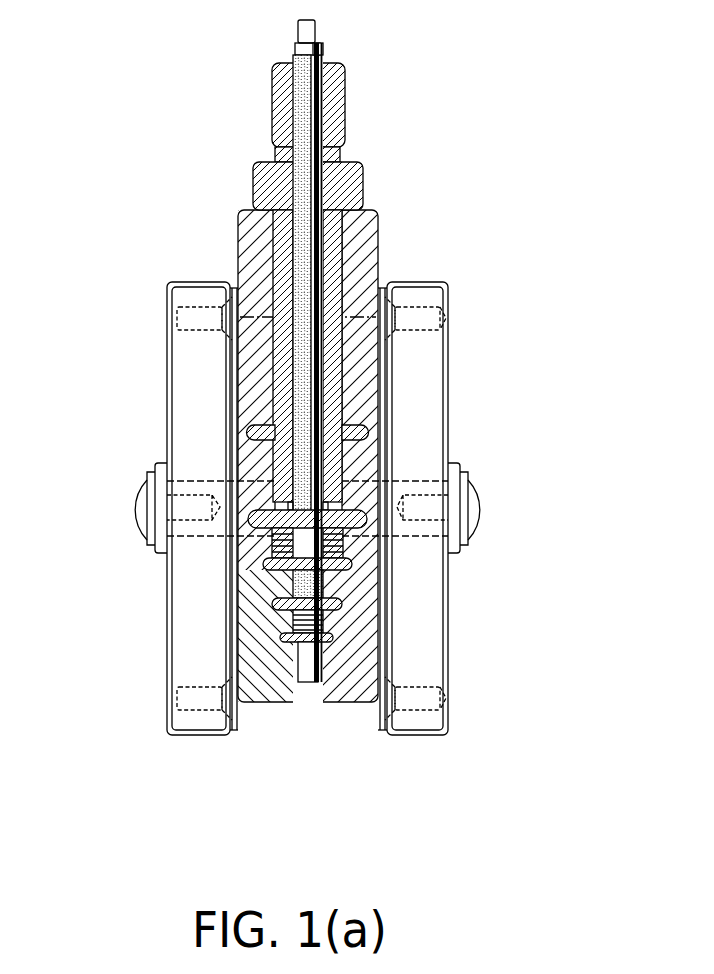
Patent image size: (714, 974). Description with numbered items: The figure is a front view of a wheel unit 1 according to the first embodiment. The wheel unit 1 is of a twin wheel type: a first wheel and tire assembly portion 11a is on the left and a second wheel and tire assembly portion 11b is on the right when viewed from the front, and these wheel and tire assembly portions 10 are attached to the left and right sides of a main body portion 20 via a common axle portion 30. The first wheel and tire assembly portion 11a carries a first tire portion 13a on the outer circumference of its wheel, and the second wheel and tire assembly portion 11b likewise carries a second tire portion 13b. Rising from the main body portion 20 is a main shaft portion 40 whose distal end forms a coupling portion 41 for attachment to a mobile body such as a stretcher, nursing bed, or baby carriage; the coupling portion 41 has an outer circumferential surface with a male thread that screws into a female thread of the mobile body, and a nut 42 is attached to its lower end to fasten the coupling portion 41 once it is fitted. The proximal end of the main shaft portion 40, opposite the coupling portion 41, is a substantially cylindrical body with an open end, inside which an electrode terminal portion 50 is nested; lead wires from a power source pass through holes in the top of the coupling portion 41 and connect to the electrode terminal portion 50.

The wheel unit 1 is at (527, 80).
The wheel and tire assembly portions 10 is at (294, 494).
The first wheel and tire assembly portion 11a is at (159, 374).
The second wheel and tire assembly portion 11b is at (459, 285).
The first tire portion 13a is at (192, 628).
The second tire portion 13b is at (423, 628).
The main body portion 20 is at (402, 211).
The common axle portion 30 is at (425, 480).
The main shaft portion 40 is at (321, 421).
The coupling portion 41 is at (346, 108).
The nut 42 is at (249, 180).
The electrode terminal portion 50 is at (338, 650).